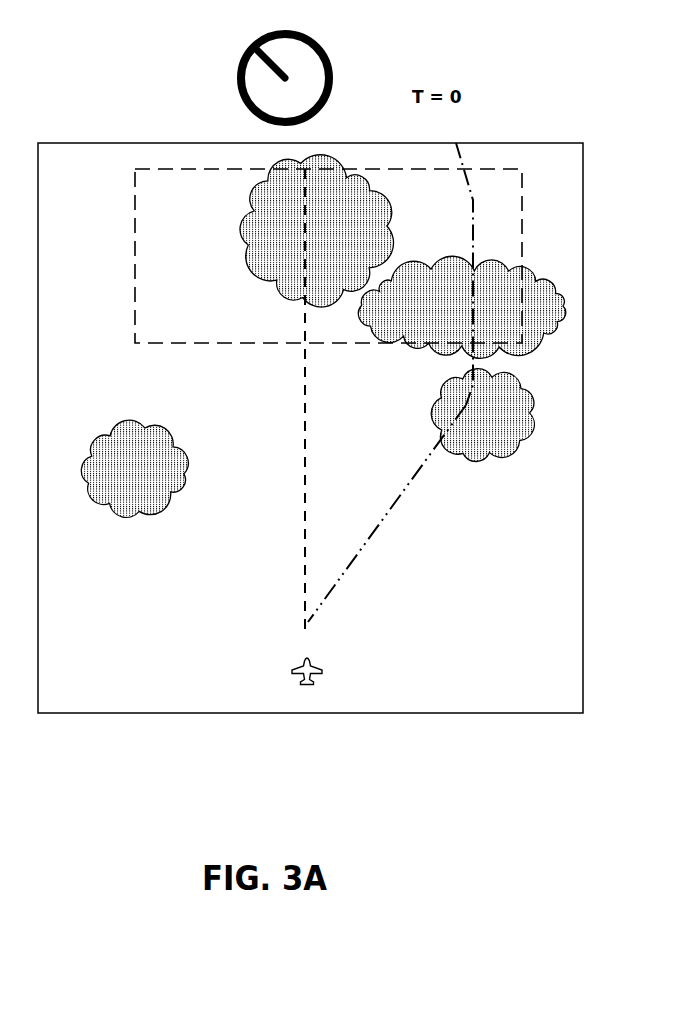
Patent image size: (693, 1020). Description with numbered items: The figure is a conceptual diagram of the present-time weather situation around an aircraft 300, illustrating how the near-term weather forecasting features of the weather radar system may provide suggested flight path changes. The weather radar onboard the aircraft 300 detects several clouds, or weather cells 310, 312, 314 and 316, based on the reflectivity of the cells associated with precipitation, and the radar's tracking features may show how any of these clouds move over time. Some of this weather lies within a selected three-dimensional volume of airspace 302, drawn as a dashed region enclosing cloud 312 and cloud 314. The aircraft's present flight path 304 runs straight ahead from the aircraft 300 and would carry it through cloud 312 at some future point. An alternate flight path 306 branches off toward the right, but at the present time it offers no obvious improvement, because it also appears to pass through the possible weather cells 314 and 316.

The aircraft 300 is at (281, 668).
The selected 3D volume of airspace 302 is at (263, 347).
The flight path 304 is at (302, 399).
The alternate flight path 306 is at (387, 513).
The cloud 310 is at (160, 421).
The cloud 312 is at (247, 216).
The cloud 314 is at (501, 273).
The cloud 316 is at (513, 450).